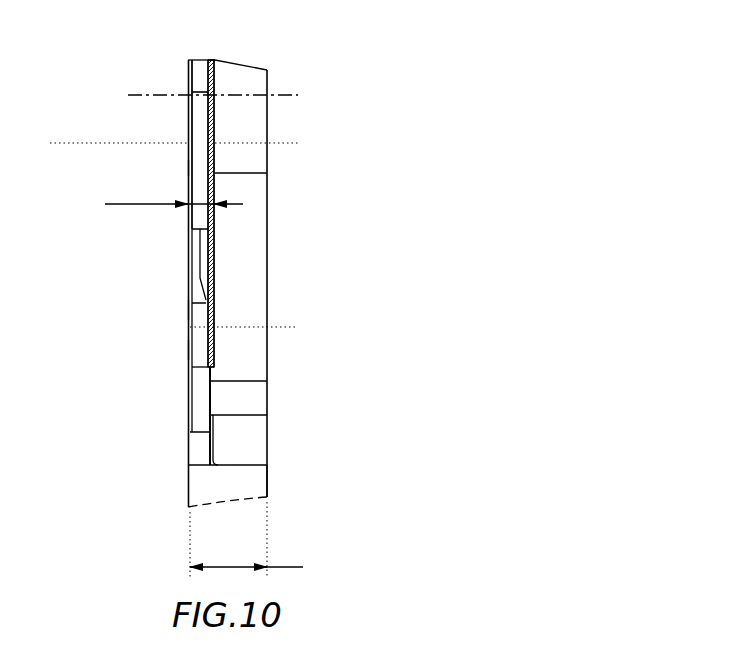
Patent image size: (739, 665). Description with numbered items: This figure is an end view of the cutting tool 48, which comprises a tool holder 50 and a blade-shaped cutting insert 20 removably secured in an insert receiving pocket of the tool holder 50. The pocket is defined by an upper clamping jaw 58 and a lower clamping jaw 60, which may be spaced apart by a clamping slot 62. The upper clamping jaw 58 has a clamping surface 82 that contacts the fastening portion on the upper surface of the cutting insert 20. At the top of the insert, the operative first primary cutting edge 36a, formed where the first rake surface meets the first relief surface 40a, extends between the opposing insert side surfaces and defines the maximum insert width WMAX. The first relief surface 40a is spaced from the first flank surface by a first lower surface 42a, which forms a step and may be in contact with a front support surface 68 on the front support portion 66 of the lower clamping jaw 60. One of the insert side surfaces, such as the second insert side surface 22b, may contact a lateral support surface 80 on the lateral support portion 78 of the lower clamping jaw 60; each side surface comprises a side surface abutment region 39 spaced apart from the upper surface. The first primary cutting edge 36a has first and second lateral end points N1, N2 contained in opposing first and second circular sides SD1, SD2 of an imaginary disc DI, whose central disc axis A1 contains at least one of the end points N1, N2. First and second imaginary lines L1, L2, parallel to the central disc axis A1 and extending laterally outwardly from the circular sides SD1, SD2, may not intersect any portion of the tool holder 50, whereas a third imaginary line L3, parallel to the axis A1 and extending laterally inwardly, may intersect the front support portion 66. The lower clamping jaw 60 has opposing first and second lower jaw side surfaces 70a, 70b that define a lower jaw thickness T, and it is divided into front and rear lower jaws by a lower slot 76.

The cutting insert 20 is at (200, 117).
The second insert side surface 22b is at (216, 260).
The first primary cutting edge 36a is at (205, 75).
The side surface abutment region 39 is at (214, 238).
The first relief surface 40a is at (196, 126).
The first lower surface 42a is at (189, 305).
The cutting tool 48 is at (378, 360).
The tool holder 50 is at (245, 306).
The upper clamping jaw 58 is at (200, 70).
The lower clamping jaw 60 is at (220, 490).
The clamping slot 62 is at (235, 128).
The front support portion 66 is at (201, 347).
The front support surface 68 is at (214, 268).
The first lower jaw side surface 70a is at (188, 452).
The second lower jaw side surface 70b is at (268, 452).
The lower slot 76 is at (240, 401).
The lateral support portion 78 is at (222, 222).
The lateral support surface 80 is at (208, 229).
The clamping surface 82 is at (215, 110).
The central disc axis A1 is at (212, 95).
The first lateral end point N1 is at (204, 66).
The second lateral end point N2 is at (215, 93).
The first imaginary line L1 is at (104, 142).
The second imaginary line L2 is at (272, 144).
The third imaginary line L3 is at (258, 329).
The first circular side SD1 is at (188, 168).
The second circular side SD2 is at (267, 173).
The maximum insert width WMAX is at (141, 202).
The imaginary disc DI is at (189, 340).
The lower jaw thickness T is at (256, 542).